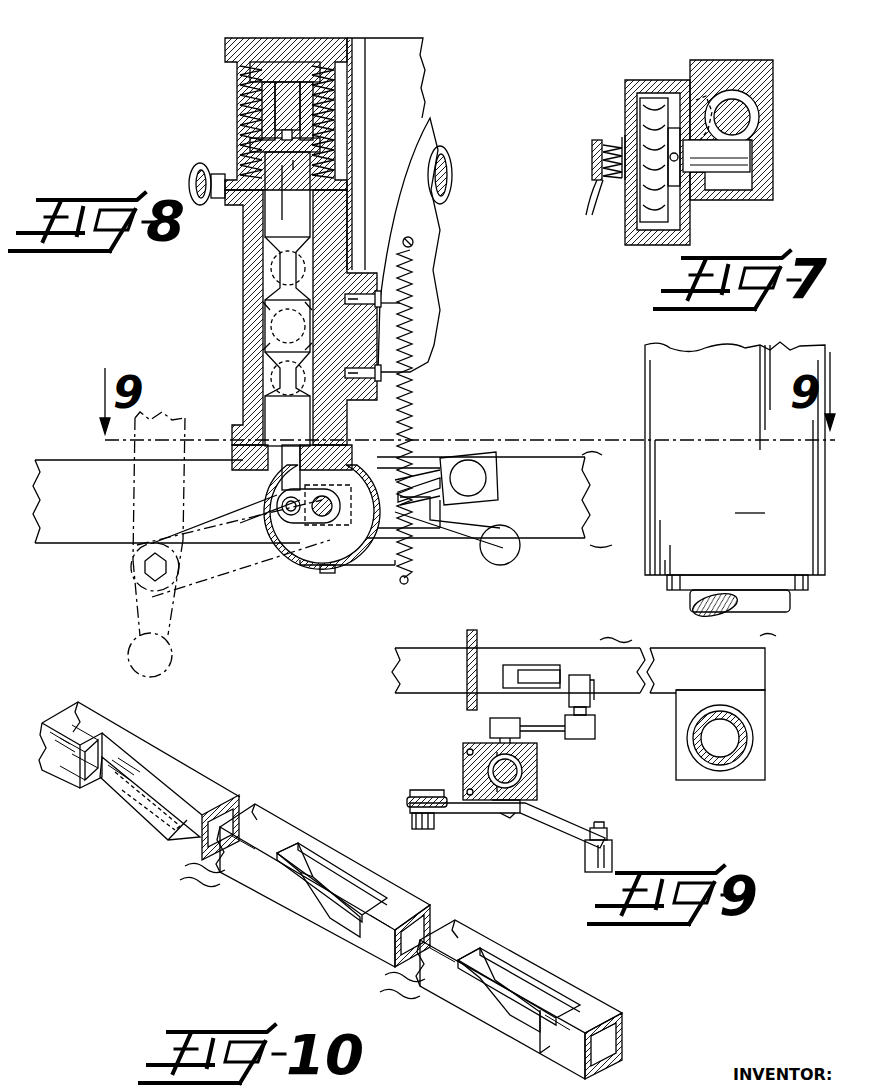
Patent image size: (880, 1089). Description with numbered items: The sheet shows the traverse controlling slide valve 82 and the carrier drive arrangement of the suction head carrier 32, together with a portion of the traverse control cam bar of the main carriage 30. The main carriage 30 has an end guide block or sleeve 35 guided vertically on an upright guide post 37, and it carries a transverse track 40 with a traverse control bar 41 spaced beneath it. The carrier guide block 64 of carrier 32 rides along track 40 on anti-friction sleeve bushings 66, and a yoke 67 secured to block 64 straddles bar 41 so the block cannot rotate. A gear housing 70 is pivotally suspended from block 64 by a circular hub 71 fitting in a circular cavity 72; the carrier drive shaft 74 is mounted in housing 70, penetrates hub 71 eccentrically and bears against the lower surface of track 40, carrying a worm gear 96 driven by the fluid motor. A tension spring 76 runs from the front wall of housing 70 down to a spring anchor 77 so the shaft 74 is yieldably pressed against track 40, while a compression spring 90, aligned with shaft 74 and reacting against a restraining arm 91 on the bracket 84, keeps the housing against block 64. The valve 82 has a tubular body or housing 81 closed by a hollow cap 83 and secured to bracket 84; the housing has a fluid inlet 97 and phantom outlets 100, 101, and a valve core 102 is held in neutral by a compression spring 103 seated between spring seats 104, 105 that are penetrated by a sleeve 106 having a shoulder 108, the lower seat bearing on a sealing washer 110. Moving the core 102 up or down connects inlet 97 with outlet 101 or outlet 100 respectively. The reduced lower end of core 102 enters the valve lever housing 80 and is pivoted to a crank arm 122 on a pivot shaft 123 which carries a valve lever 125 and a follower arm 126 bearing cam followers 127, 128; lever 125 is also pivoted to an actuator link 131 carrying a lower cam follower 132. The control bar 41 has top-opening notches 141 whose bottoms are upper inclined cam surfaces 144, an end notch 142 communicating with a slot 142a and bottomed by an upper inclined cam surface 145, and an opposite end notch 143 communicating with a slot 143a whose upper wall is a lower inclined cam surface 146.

In FIG. 8, the main carriage 30 is at (60, 462).
In FIG. 9, the main carriage 30 is at (547, 664).
In FIG. 10, the main carriage 30 is at (330, 890).
In FIG. 8, the auxiliary carriage or carrier 32 is at (428, 102).
In FIG. 7, the auxiliary carriage or carrier 32 is at (691, 142).
In FIG. 8, the end guide block or sleeve 35 is at (735, 458).
In FIG. 9, the end guide block or sleeve 35 is at (742, 782).
In FIG. 8, the upright guide bar or post 37 is at (762, 605).
In FIG. 9, the upright guide bar or post 37 is at (745, 748).
In FIG. 8, the transverse guide rod or track 40 is at (446, 148).
In FIG. 7, the transverse guide rod or track 40 is at (748, 118).
In FIG. 8, the traverse control bar 41 is at (331, 483).
In FIG. 9, the traverse control bar 41 is at (398, 676).
In FIG. 10, the traverse control bar 41 is at (265, 822).
In FIG. 8, the carrier guide block 64 is at (420, 84).
In FIG. 7, the carrier guide block 64 is at (745, 62).
In FIG. 7, the anti-friction sleeve bushing 66 is at (760, 95).
In FIG. 9, the yoke 67 is at (466, 642).
In FIG. 8, the gear housing 70 is at (426, 220).
In FIG. 7, the gear housing 70 is at (658, 80).
In FIG. 7, the hub 71 is at (700, 100).
In FIG. 7, the cavity 72 is at (728, 190).
In FIG. 7, the carrier drive shaft 74 is at (752, 158).
In FIG. 8, the tension spring 76 is at (413, 392).
In FIG. 8, the spring anchor 77 is at (356, 570).
In FIG. 8, the valve lever housing 80 is at (285, 552).
In FIG. 8, the tubular body of slide valve (valve housing) 81 is at (236, 313).
In FIG. 9, the tubular body of slide valve (valve housing) 81 is at (463, 774).
In FIG. 8, the traverse controlling slide valve 82 is at (279, 330).
In FIG. 9, the traverse controlling slide valve 82 is at (471, 761).
In FIG. 8, the hollow cap 83 is at (226, 74).
In FIG. 8, the bracket 84 is at (362, 118).
In FIG. 7, the compression spring 90 is at (608, 142).
In FIG. 7, the restraining arm 91 is at (586, 170).
In FIG. 7, the worm gear 96 is at (650, 198).
In FIG. 8, the fluid inlet 97 is at (243, 338).
In FIG. 8, the fluid outlet 100 is at (262, 262).
In FIG. 8, the fluid outlet 101 is at (270, 376).
In FIG. 8, the valve core 102 is at (268, 232).
In FIG. 9, the valve core 102 is at (520, 771).
In FIG. 8, the compression spring 103 is at (240, 100).
In FIG. 8, the lower spring seat 104 is at (335, 160).
In FIG. 8, the upper spring seat 105 is at (318, 66).
In FIG. 8, the sleeve 106 is at (288, 100).
In FIG. 8, the shoulder 108 is at (218, 178).
In FIG. 8, the sealing washer 110 is at (190, 184).
In FIG. 8, the crank arm 122 is at (283, 504).
In FIG. 8, the pivot shaft 123 is at (292, 530).
In FIG. 9, the pivot shaft 123 is at (492, 732).
In FIG. 8, the valve lever 125 is at (196, 588).
In FIG. 9, the valve lever 125 is at (478, 815).
In FIG. 8, the follower arm 126 is at (410, 476).
In FIG. 9, the follower arm 126 is at (556, 728).
In FIG. 8, the cam follower 127 is at (504, 566).
In FIG. 9, the cam follower 127 is at (612, 856).
In FIG. 8, the cam follower 128 is at (480, 458).
In FIG. 9, the cam follower 128 is at (578, 675).
In FIG. 8, the actuator link 131 is at (138, 490).
In FIG. 9, the actuator link 131 is at (408, 800).
In FIG. 8, the lower cam follower 132 is at (128, 655).
In FIG. 9, the lower cam follower 132 is at (425, 830).
In FIG. 10, the notch 141 is at (348, 864).
In FIG. 8, the notch 142 is at (499, 465).
In FIG. 9, the notch 142 is at (545, 672).
In FIG. 10, the notch 142 is at (548, 988).
In FIG. 8, the slot 142a is at (455, 530).
In FIG. 9, the slot 142a is at (594, 695).
In FIG. 10, the slot 142a is at (545, 1022).
In FIG. 10, the notch 143 is at (112, 793).
In FIG. 10, the slot 143a is at (112, 748).
In FIG. 10, the upper inclined cam surface 144 is at (322, 888).
In FIG. 8, the upper inclined cam surface 145 is at (415, 515).
In FIG. 9, the upper inclined cam surface 145 is at (520, 686).
In FIG. 10, the upper inclined cam surface 145 is at (492, 1000).
In FIG. 10, the lower inclined cam surface 146 is at (138, 822).